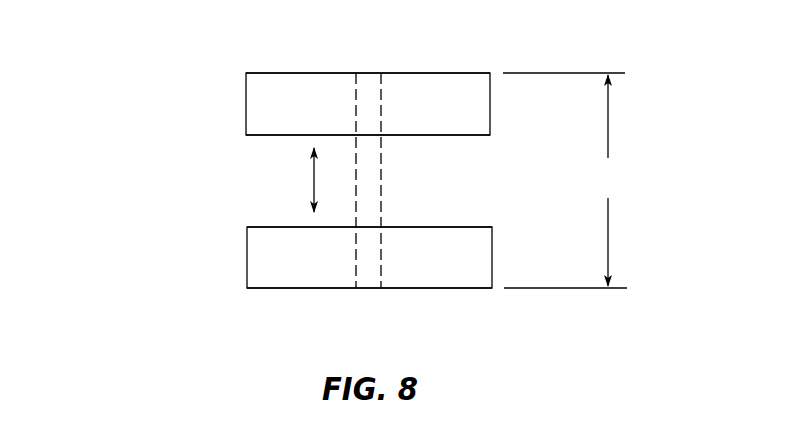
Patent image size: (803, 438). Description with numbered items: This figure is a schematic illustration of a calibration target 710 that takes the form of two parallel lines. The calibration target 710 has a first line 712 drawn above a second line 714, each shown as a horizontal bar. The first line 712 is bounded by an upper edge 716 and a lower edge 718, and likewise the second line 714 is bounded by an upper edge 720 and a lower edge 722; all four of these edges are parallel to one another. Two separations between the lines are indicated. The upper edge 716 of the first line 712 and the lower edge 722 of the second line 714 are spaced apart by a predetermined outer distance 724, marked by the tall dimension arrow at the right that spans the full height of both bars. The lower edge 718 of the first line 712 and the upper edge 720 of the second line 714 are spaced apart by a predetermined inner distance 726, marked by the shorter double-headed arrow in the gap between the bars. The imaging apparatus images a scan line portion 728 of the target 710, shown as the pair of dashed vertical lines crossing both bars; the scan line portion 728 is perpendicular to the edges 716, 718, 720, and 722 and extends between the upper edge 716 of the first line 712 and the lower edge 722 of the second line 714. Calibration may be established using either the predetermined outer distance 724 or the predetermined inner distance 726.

The calibration target 710 is at (147, 103).
The first line 712 is at (432, 72).
The second line 714 is at (433, 289).
The upper edge 716 is at (308, 72).
The lower edge 718 is at (472, 136).
The upper edge 720 is at (465, 226).
The lower edge 722 is at (310, 289).
The predetermined outer distance 724 is at (565, 180).
The predetermined inner distance 726 is at (310, 180).
The scan line portion 728 is at (365, 85).